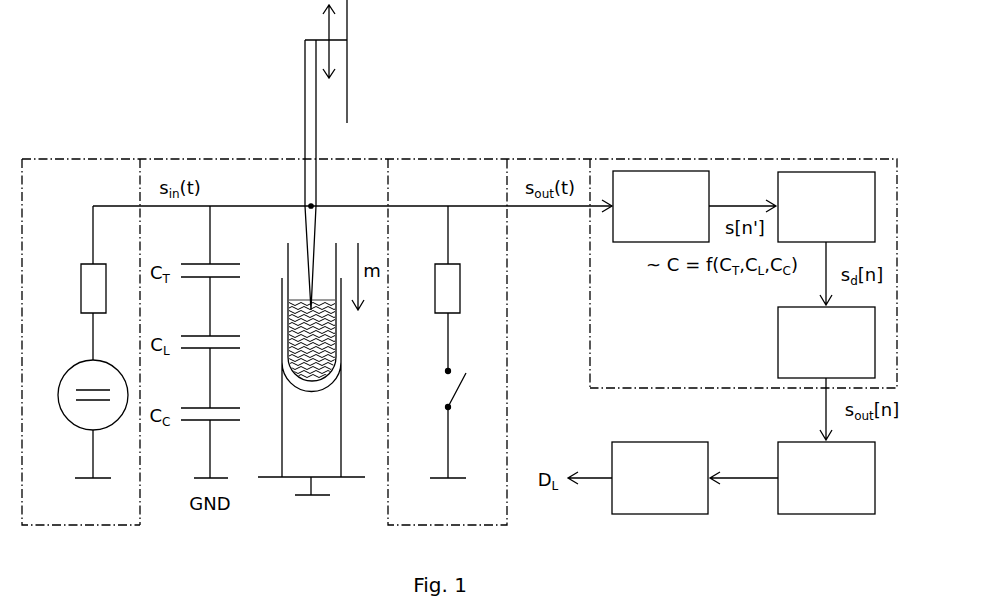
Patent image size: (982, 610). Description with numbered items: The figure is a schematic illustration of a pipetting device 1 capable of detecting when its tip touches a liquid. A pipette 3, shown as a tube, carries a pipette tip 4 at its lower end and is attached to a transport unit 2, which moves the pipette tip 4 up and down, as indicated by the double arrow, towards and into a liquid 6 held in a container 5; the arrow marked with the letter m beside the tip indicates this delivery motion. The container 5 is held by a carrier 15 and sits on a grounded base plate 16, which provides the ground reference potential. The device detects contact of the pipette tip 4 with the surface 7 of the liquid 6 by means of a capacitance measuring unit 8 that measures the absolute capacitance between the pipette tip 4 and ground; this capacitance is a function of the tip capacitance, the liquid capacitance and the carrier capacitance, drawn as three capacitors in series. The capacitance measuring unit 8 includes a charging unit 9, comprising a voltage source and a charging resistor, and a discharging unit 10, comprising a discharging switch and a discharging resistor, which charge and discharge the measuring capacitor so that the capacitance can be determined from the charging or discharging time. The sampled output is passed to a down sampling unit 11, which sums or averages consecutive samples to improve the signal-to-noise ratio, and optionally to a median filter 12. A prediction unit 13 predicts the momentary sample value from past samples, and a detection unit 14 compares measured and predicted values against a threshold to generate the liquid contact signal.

The pipetting device 1 is at (84, 40).
The transport unit 2 is at (350, 40).
The pipette 3 is at (303, 125).
The pipette tip 4 is at (308, 280).
The container 5 is at (285, 253).
The liquid 6 is at (310, 352).
The surface of the liquid 7 is at (292, 301).
The capacitance measuring unit 8 is at (654, 216).
The charging unit 9 is at (38, 198).
The discharging unit 10 is at (399, 198).
The down sampling unit 11 is at (815, 216).
The median filter 12 is at (815, 352).
The prediction unit 13 is at (815, 487).
The detection unit 14 is at (649, 487).
The carrier 15 is at (312, 422).
The grounded base plate 16 is at (275, 483).